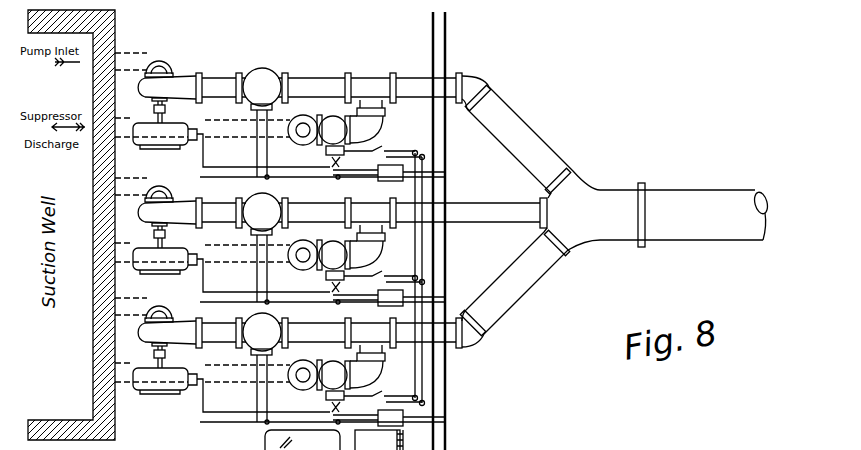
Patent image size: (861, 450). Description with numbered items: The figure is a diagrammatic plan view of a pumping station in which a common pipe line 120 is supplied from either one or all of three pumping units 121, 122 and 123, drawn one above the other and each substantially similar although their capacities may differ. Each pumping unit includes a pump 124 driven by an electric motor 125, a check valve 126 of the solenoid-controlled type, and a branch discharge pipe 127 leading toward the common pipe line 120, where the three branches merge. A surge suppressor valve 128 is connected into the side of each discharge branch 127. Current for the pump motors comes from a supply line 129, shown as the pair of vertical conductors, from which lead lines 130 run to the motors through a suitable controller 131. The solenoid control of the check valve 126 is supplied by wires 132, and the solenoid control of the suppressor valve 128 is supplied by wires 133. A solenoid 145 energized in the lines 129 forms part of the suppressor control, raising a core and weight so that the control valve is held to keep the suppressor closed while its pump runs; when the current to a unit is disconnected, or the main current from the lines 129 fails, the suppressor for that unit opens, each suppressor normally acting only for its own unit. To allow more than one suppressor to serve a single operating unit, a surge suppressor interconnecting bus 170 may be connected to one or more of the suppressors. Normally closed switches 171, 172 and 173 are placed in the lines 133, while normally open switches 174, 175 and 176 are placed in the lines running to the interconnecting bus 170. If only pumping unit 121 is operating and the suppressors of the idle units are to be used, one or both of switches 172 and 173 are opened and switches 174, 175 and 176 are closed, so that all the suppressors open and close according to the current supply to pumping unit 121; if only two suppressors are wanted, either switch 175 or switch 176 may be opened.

The common pipe line 120 is at (676, 193).
The pumping unit 121 is at (147, 110).
The pumping unit 122 is at (142, 235).
The pumping unit 123 is at (142, 355).
The pump 124 is at (186, 80).
The electric motor 125 is at (176, 130).
The check valve 126 is at (272, 53).
The branch discharge pipe 127 is at (408, 88).
The surge suppressor valve 128 is at (318, 148).
The line 129 is at (434, 47).
The lead lines 130 is at (327, 178).
The controller 131 is at (380, 181).
The wires 132 is at (257, 148).
The wires 133 is at (336, 146).
The solenoid 145 is at (403, 441).
The surge suppressor interconnecting bus 170 is at (420, 252).
The normally closed switch 171 is at (341, 161).
The normally closed switch 172 is at (349, 289).
The normally closed switch 173 is at (360, 397).
The normally open switch 174 is at (378, 157).
The normally open switch 175 is at (383, 271).
The normally open switch 176 is at (383, 387).